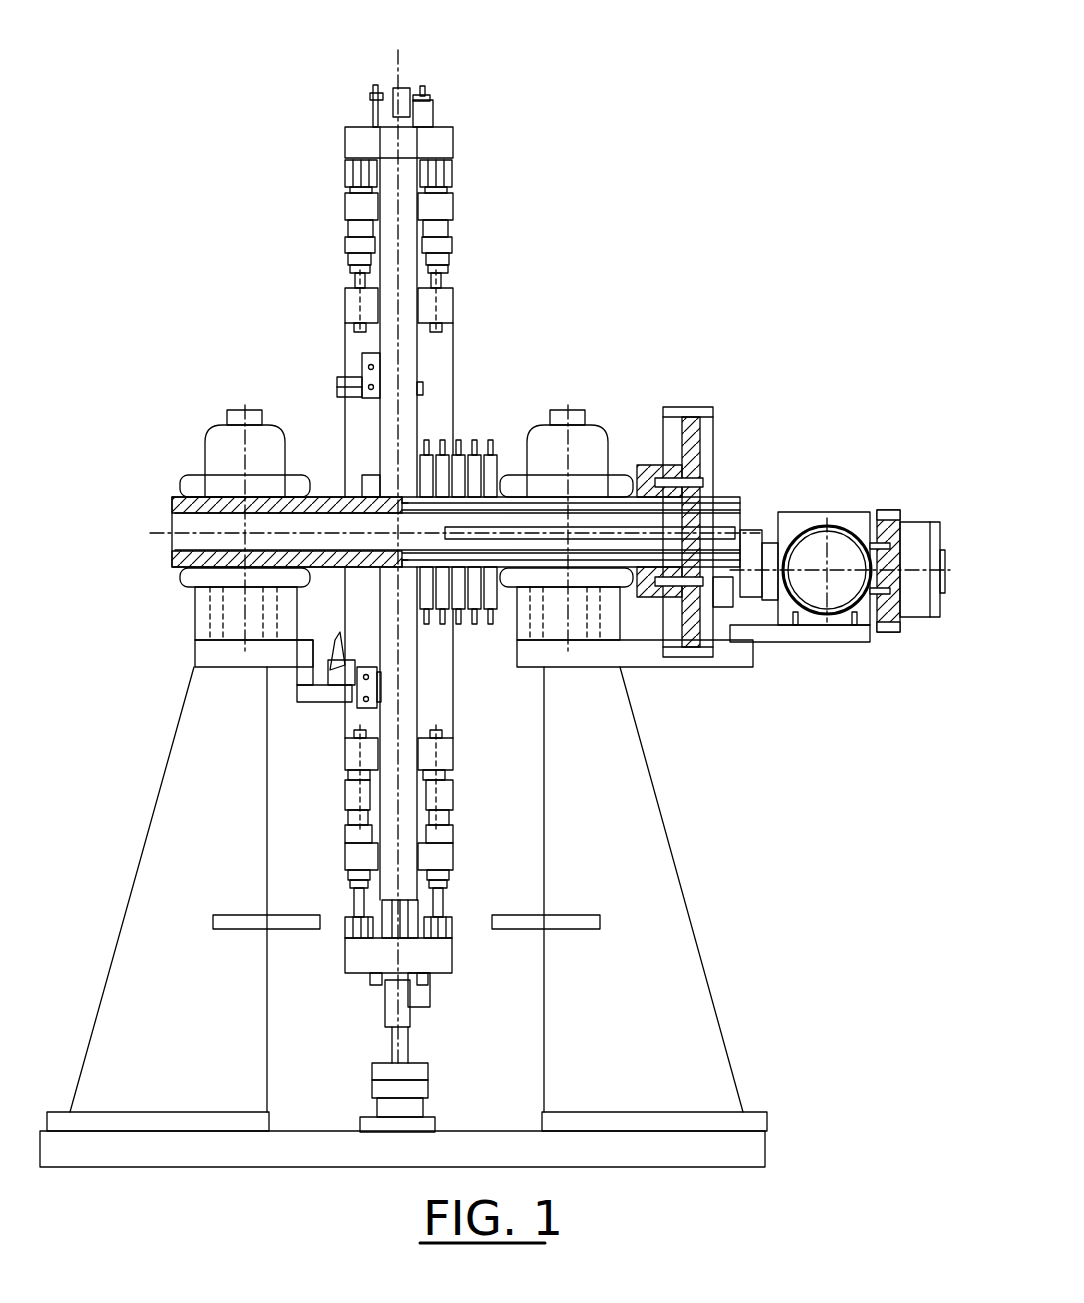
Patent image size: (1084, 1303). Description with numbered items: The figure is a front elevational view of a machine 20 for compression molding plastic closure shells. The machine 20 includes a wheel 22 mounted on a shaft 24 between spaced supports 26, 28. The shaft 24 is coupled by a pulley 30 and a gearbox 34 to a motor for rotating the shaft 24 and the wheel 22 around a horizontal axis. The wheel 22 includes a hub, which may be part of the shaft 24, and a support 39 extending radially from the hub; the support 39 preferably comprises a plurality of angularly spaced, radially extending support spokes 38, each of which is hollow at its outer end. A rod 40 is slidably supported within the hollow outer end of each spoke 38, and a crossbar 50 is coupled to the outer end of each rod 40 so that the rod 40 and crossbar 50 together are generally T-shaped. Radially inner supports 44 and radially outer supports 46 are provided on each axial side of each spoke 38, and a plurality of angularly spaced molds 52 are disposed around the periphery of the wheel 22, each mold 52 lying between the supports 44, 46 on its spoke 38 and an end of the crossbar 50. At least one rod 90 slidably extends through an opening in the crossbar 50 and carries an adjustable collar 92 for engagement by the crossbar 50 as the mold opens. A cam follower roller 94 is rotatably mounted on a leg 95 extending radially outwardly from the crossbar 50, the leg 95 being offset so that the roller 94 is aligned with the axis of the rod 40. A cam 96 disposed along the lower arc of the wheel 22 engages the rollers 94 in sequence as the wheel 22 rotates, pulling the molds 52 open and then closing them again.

The machine 20 is at (676, 290).
The wheel 22 is at (428, 529).
The shaft 24 is at (168, 566).
The support 26 is at (187, 774).
The support 28 is at (634, 785).
The pulley 30 is at (700, 407).
The gearbox 34 is at (795, 518).
The support spoke 38 is at (387, 340).
The support 39 is at (425, 372).
The rod 40 is at (400, 932).
The radially inner support 44 is at (443, 310).
The radially outer support 46 is at (352, 207).
The crossbar 50 is at (353, 140).
The mold 52 is at (330, 184).
The rod 90 is at (373, 108).
The collar 92 is at (370, 95).
The cam follower roller 94 is at (403, 90).
The leg 95 is at (434, 110).
The cam 96 is at (403, 1033).